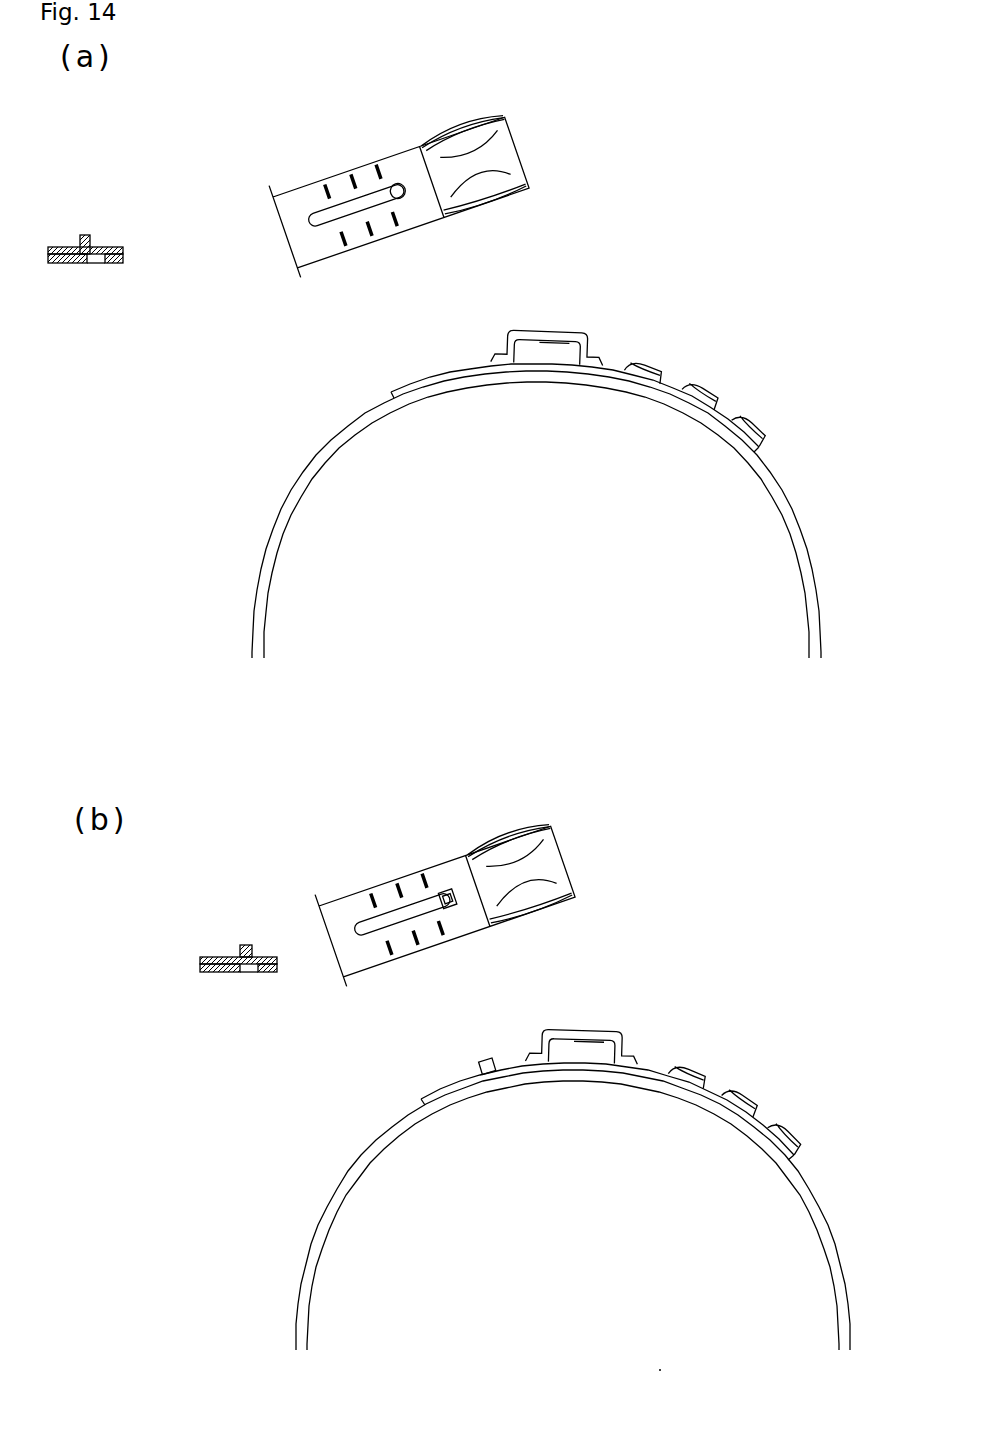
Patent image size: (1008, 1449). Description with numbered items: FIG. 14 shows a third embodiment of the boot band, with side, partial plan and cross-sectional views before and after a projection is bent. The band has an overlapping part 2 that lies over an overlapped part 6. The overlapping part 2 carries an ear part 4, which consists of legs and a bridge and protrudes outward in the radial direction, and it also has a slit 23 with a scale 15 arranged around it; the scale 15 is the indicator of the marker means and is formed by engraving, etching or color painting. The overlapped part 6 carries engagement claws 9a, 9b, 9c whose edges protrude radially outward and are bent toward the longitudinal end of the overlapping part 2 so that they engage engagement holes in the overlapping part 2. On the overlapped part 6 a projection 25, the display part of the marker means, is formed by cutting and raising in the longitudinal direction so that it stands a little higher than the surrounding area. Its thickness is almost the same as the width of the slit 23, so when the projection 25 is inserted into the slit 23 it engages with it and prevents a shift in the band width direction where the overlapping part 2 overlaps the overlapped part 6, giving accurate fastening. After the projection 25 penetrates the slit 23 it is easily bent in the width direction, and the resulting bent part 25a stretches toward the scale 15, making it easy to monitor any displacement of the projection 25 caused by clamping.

The overlapping part 2 is at (427, 212).
The ear part 4 is at (478, 115).
The overlapped part 6 is at (68, 263).
The engagement claw 9a is at (654, 367).
The engagement claw 9b is at (710, 394).
The engagement claw 9c is at (752, 432).
The scale 15 is at (317, 193).
The slit 23 is at (362, 202).
The projection 25 is at (396, 186).
The bent part 25a is at (447, 916).